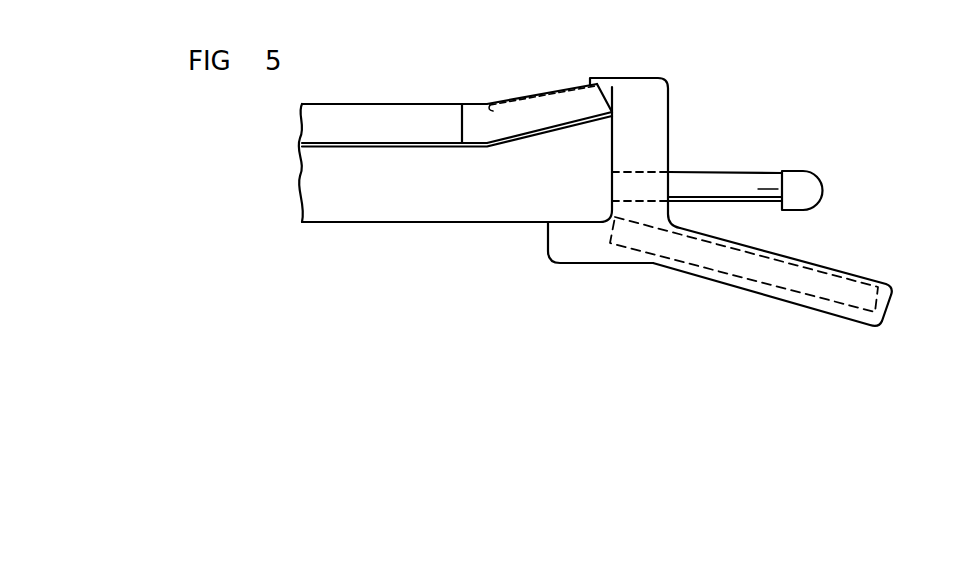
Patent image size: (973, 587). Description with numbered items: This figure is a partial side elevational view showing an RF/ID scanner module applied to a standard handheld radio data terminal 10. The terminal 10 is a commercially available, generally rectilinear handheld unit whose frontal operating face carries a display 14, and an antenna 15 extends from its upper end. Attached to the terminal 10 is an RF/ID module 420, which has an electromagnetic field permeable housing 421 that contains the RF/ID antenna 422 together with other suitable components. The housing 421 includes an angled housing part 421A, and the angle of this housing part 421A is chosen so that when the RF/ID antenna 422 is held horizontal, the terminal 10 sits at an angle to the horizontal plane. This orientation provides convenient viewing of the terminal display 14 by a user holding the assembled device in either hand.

The handheld radio data terminal 10 is at (334, 222).
The display 14 is at (490, 104).
The antenna 15 is at (725, 180).
The RF/ID module 420 is at (546, 252).
The housing 421 is at (633, 76).
The housing part 421A is at (680, 272).
The RF/ID antenna 422 is at (807, 297).